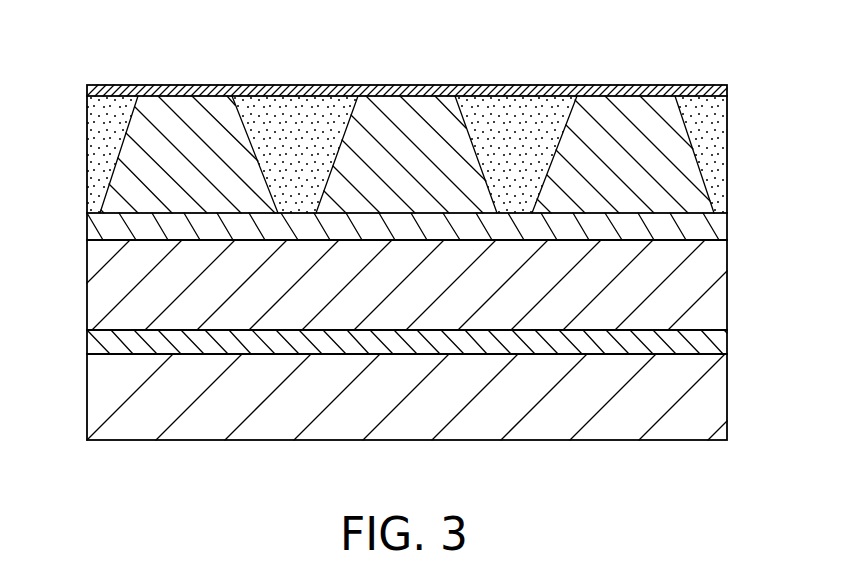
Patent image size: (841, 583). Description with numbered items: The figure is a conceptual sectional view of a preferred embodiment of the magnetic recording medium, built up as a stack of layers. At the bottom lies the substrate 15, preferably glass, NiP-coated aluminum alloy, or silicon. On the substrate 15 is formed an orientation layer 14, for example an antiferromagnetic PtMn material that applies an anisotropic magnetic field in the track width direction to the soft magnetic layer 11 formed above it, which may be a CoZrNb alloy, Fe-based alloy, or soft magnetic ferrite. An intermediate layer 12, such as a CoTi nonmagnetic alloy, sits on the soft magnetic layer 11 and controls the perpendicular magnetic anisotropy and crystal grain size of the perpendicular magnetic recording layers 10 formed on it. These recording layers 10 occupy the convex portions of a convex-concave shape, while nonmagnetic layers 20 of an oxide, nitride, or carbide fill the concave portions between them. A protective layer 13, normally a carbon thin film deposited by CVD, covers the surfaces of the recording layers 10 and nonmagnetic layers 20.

The perpendicular magnetic recording layer 10 is at (188, 124).
The nonmagnetic layer 20 is at (300, 110).
The protective layer 13 is at (470, 93).
The intermediate layer 12 is at (717, 223).
The soft magnetic layer 11 is at (720, 275).
The orientation layer 14 is at (712, 343).
The substrate 15 is at (718, 390).